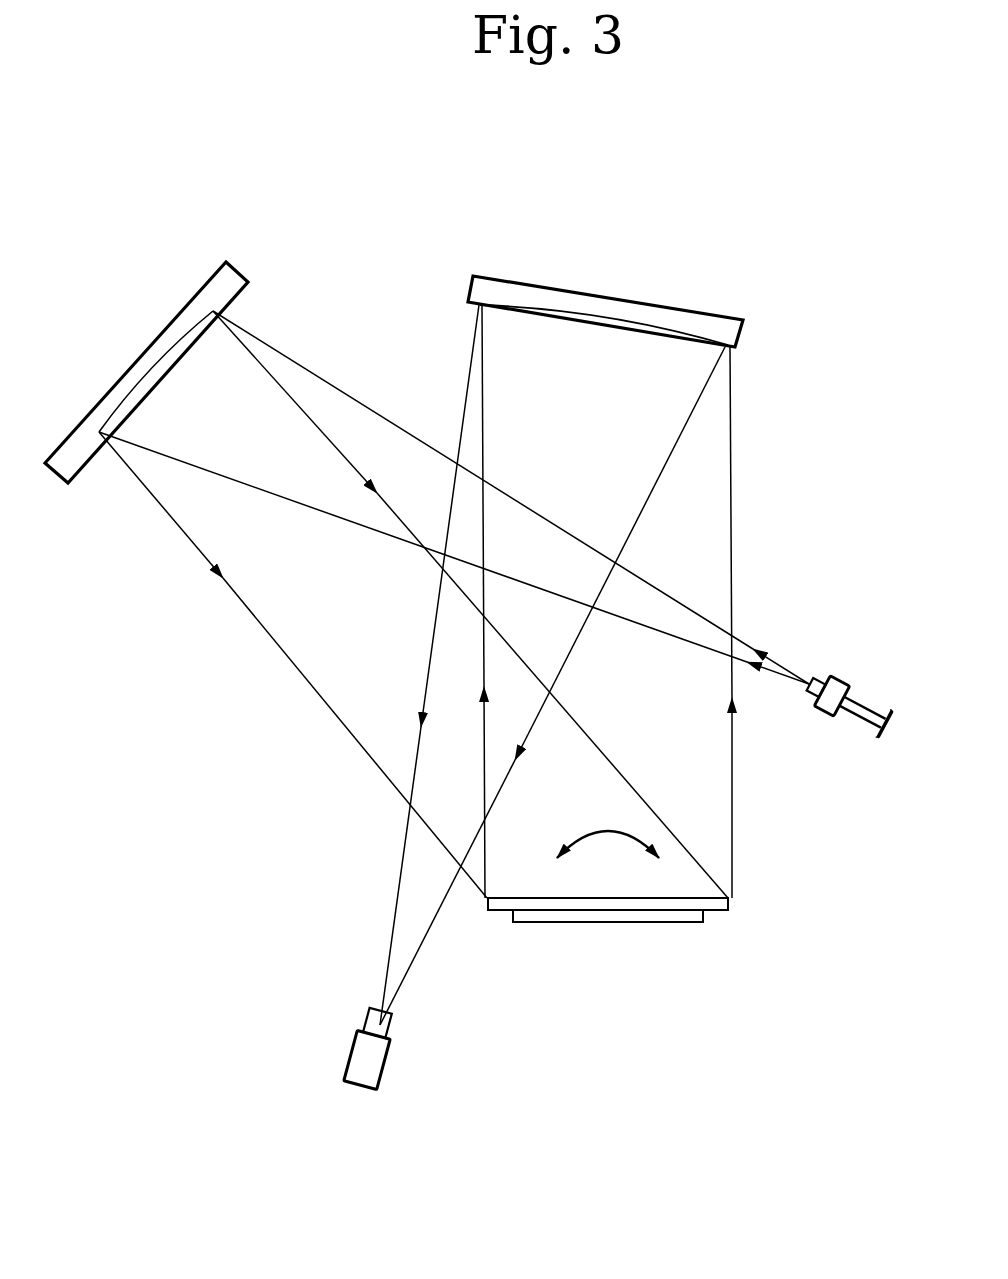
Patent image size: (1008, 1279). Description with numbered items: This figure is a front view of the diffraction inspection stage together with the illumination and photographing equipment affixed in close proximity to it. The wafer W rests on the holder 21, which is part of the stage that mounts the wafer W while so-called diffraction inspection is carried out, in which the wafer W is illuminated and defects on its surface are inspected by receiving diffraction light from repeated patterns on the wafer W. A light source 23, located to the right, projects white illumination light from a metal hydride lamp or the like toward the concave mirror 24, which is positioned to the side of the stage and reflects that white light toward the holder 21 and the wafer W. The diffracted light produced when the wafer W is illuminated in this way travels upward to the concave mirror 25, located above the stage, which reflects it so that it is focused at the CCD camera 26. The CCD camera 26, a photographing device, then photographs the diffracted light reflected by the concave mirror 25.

The light source 23 is at (840, 685).
The concave mirror 24 is at (210, 290).
The concave mirror 25 is at (642, 307).
The CCD camera 26 is at (380, 1060).
The wafer W is at (728, 903).
The holder 21 is at (698, 922).